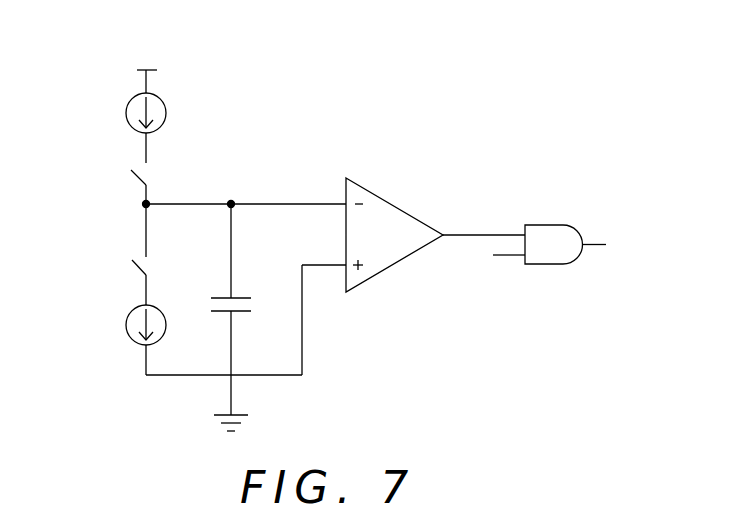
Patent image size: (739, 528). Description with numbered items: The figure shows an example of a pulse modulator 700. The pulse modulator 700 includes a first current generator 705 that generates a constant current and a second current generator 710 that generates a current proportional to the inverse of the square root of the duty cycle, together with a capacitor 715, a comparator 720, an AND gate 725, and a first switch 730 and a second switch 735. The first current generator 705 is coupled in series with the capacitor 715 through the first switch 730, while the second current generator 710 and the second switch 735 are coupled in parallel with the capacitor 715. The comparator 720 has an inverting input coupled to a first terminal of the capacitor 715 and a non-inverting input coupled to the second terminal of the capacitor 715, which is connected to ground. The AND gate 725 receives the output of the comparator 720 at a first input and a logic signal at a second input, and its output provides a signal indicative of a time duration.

The pulse modulator 700 is at (201, 40).
The first current generator 705 is at (129, 124).
The second current generator 710 is at (129, 338).
The capacitor 715 is at (208, 305).
The comparator 720 is at (410, 214).
The AND gate 725 is at (548, 224).
The first switch 730 is at (131, 181).
The second switch 735 is at (131, 272).